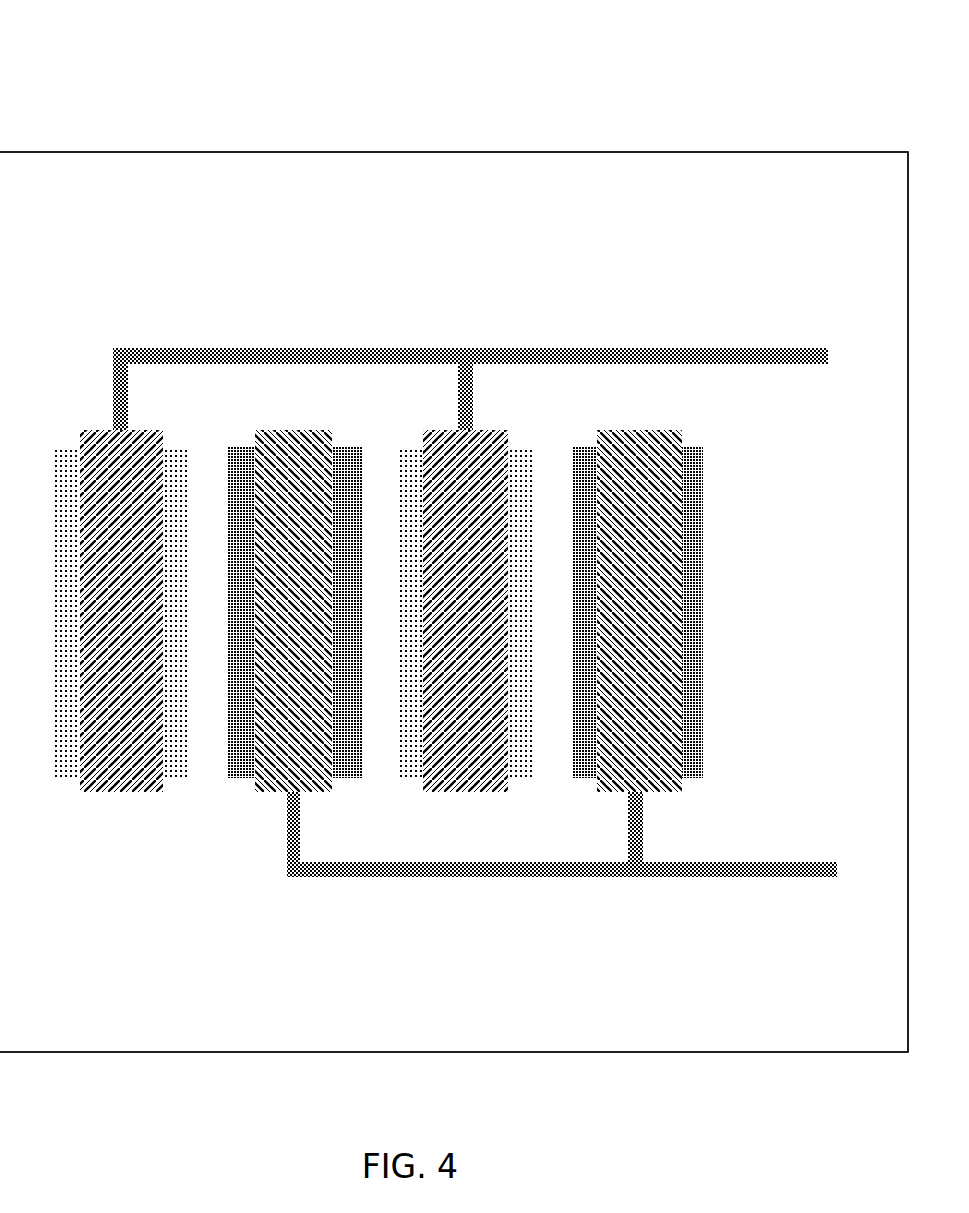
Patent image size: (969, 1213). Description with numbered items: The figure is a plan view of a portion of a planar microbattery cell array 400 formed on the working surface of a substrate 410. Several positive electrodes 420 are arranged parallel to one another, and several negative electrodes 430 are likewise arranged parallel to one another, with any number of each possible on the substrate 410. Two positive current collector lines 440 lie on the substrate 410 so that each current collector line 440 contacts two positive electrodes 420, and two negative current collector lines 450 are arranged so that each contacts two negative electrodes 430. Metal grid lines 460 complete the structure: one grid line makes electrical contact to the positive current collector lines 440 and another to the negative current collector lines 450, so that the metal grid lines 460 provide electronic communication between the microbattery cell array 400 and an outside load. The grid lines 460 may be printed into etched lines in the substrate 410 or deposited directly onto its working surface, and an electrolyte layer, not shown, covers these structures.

The planar microbattery cell array 400 is at (198, 107).
The substrate 410 is at (860, 1016).
The positive electrodes 420 is at (575, 450).
The negative electrodes 430 is at (497, 788).
The positive current collector lines 440 is at (305, 437).
The negative current collector lines 450 is at (128, 792).
The metal grid lines 460 is at (735, 365).